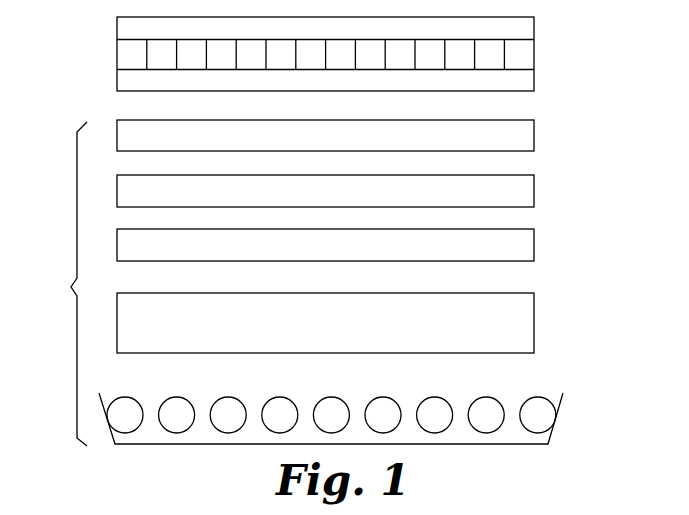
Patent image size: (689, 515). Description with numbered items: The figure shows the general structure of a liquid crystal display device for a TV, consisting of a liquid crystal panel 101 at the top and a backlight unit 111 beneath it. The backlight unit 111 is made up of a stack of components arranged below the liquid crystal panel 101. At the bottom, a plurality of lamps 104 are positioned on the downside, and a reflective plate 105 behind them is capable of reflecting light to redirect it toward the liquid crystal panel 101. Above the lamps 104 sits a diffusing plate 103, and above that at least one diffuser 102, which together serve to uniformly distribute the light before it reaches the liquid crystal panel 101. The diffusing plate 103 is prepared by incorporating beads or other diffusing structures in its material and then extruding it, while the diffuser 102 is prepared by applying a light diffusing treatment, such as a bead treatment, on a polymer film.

The liquid crystal panel 101 is at (525, 53).
The diffuser 102 is at (528, 138).
The diffusing plate 103 is at (527, 327).
The lamps 104 is at (540, 398).
The reflective plate 105 is at (565, 395).
The backlight unit 111 is at (324, 285).